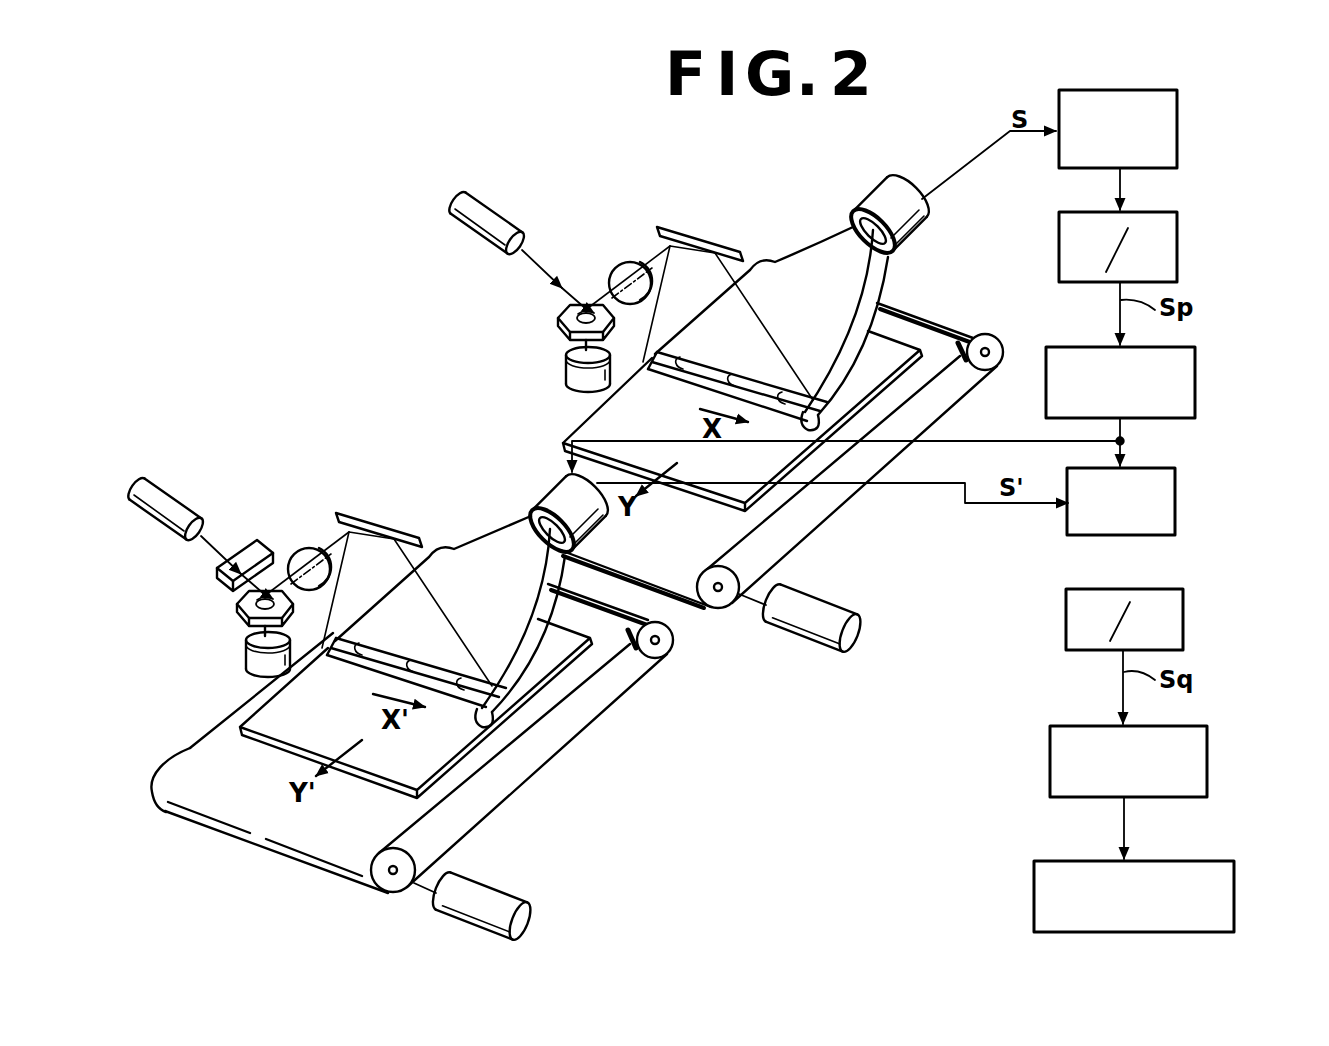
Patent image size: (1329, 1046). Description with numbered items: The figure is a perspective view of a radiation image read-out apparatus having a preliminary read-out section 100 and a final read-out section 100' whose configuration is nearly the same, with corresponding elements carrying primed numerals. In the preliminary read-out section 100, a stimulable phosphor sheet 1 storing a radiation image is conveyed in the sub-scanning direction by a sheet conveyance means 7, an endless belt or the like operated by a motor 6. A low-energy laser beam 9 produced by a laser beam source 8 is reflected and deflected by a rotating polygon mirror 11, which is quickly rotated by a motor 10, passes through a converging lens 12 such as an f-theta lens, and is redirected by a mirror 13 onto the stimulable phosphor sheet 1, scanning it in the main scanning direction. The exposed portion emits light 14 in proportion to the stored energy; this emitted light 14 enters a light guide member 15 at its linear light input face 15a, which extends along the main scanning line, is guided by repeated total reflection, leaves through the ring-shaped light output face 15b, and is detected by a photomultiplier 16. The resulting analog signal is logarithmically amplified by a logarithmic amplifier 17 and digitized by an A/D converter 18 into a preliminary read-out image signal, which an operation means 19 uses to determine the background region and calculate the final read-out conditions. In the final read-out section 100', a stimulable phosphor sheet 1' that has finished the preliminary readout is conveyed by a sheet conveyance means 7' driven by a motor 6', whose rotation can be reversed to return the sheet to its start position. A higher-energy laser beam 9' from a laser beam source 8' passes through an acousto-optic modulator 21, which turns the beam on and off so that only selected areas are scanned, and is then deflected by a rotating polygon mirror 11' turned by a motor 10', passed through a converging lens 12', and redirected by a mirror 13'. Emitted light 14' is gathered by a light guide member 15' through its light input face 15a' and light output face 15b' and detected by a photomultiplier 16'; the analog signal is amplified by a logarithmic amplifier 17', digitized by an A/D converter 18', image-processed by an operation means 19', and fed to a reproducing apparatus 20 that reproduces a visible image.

The preliminary read-out section 100 is at (700, 263).
The final read-out section 100' is at (366, 547).
The stimulable phosphor sheet 1 is at (742, 434).
The stimulable phosphor sheet 1' is at (416, 717).
The motor 6 is at (807, 611).
The motor 6' is at (485, 896).
The sheet conveyance means 7 is at (781, 455).
The sheet conveyance means 7' is at (412, 738).
The laser beam source 8 is at (495, 219).
The laser beam source 8' is at (187, 502).
The laser beam 9 is at (553, 265).
The laser beam 9' is at (232, 542).
The motor 10 is at (557, 365).
The motor 10' is at (235, 652).
The rotating polygon mirror 11 is at (556, 319).
The rotating polygon mirror 11' is at (228, 605).
The converging lens 12 is at (628, 252).
The converging lens 12' is at (307, 529).
The mirror 13 is at (708, 228).
The mirror 13' is at (388, 507).
The emitted light 14 is at (733, 391).
The emitted light 14' is at (403, 685).
The light guide member 15 is at (771, 310).
The light guide member 15' is at (450, 590).
The light input face 15a is at (878, 444).
The light input face 15a' is at (560, 741).
The light output face 15b is at (919, 248).
The light output face 15b' is at (617, 534).
The photomultiplier 16 is at (886, 201).
The photomultiplier 16' is at (544, 491).
The logarithmic amplifier 17 is at (1121, 101).
The logarithmic amplifier 17' is at (1157, 501).
The A/D converter 18 is at (1151, 247).
The A/D converter 18' is at (1159, 616).
The operation means 19 is at (1156, 382).
The operation means 19' is at (1159, 761).
The reproducing apparatus 20 is at (1235, 880).
The acousto-optic modulator 21 is at (228, 560).